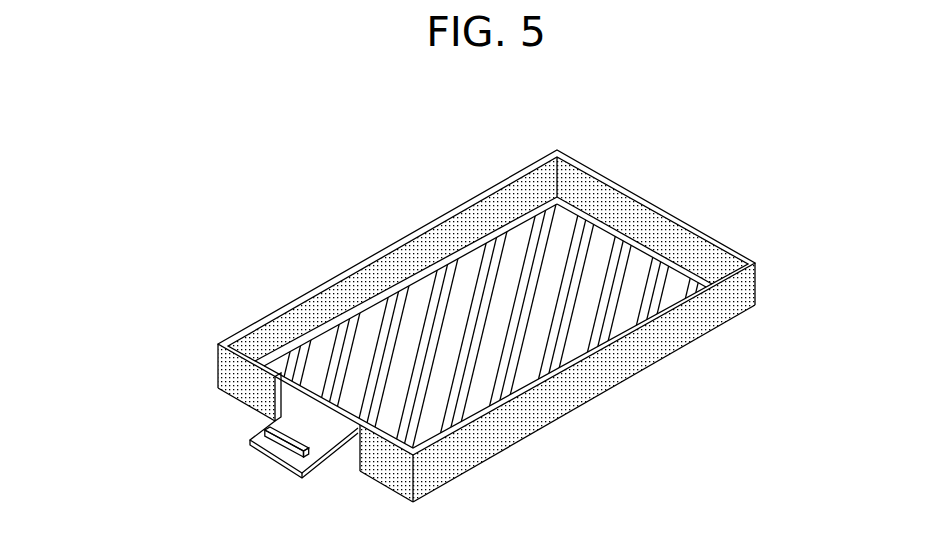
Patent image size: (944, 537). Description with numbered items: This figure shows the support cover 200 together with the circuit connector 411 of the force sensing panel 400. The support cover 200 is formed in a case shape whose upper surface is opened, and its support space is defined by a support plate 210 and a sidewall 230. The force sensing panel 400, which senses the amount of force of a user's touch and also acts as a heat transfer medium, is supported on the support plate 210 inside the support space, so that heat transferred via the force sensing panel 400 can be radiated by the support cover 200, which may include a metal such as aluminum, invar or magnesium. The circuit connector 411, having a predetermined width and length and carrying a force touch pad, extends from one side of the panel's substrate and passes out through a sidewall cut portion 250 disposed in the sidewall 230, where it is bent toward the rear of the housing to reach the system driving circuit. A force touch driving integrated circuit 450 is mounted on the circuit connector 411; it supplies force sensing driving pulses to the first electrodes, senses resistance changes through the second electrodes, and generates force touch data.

The support cover 200 is at (317, 277).
The support plate 210 is at (300, 338).
The sidewall 230 is at (387, 277).
The sidewall cut portion 250 is at (288, 397).
The force sensing panel 400 is at (603, 249).
The circuit connector 411 is at (257, 443).
The force touch driving integrated circuit 450 is at (297, 453).